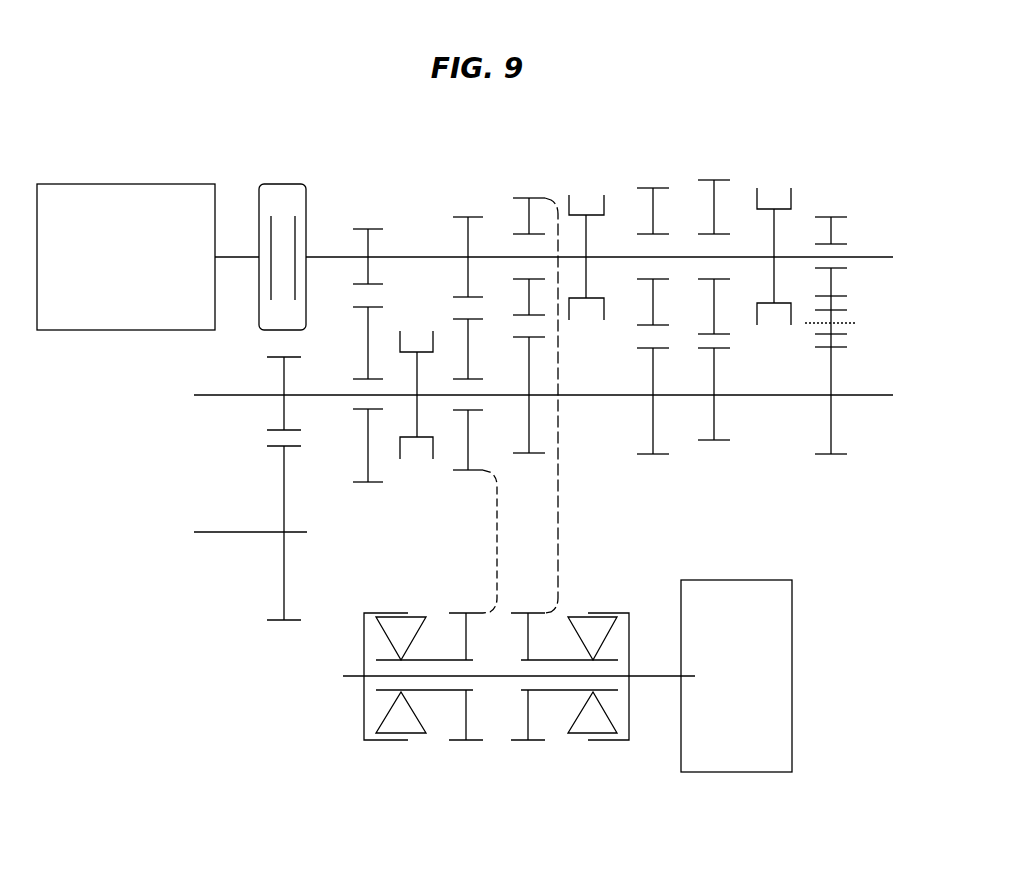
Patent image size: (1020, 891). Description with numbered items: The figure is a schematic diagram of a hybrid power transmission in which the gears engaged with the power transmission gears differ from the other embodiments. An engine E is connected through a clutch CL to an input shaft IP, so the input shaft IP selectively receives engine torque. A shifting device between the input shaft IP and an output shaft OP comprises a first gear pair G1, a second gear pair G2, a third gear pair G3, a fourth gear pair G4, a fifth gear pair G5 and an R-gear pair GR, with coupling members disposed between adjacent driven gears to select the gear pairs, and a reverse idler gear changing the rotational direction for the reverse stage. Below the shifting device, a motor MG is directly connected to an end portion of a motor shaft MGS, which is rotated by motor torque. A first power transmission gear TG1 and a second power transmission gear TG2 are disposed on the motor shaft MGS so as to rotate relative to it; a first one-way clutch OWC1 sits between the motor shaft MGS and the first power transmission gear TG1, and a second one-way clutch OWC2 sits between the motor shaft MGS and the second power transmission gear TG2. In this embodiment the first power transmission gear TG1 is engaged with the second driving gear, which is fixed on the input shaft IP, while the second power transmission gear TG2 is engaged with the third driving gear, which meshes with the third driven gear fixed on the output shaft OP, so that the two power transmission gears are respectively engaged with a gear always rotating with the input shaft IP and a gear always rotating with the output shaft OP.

The engine E is at (126, 257).
The clutch CL is at (285, 182).
The input shaft IP is at (873, 256).
The output shaft OP is at (873, 393).
The first gear pair G1 is at (368, 344).
The second gear pair G2 is at (468, 332).
The third gear pair G3 is at (529, 315).
The fourth gear pair G4 is at (653, 309).
The fifth gear pair G5 is at (714, 299).
The R-gear pair GR is at (831, 322).
The motor MG is at (736, 676).
The motor shaft MGS is at (646, 678).
The first one-way clutch OWC1 is at (416, 740).
The second one-way clutch OWC2 is at (585, 741).
The first power transmission gear TG1 is at (475, 741).
The second power transmission gear TG2 is at (535, 741).